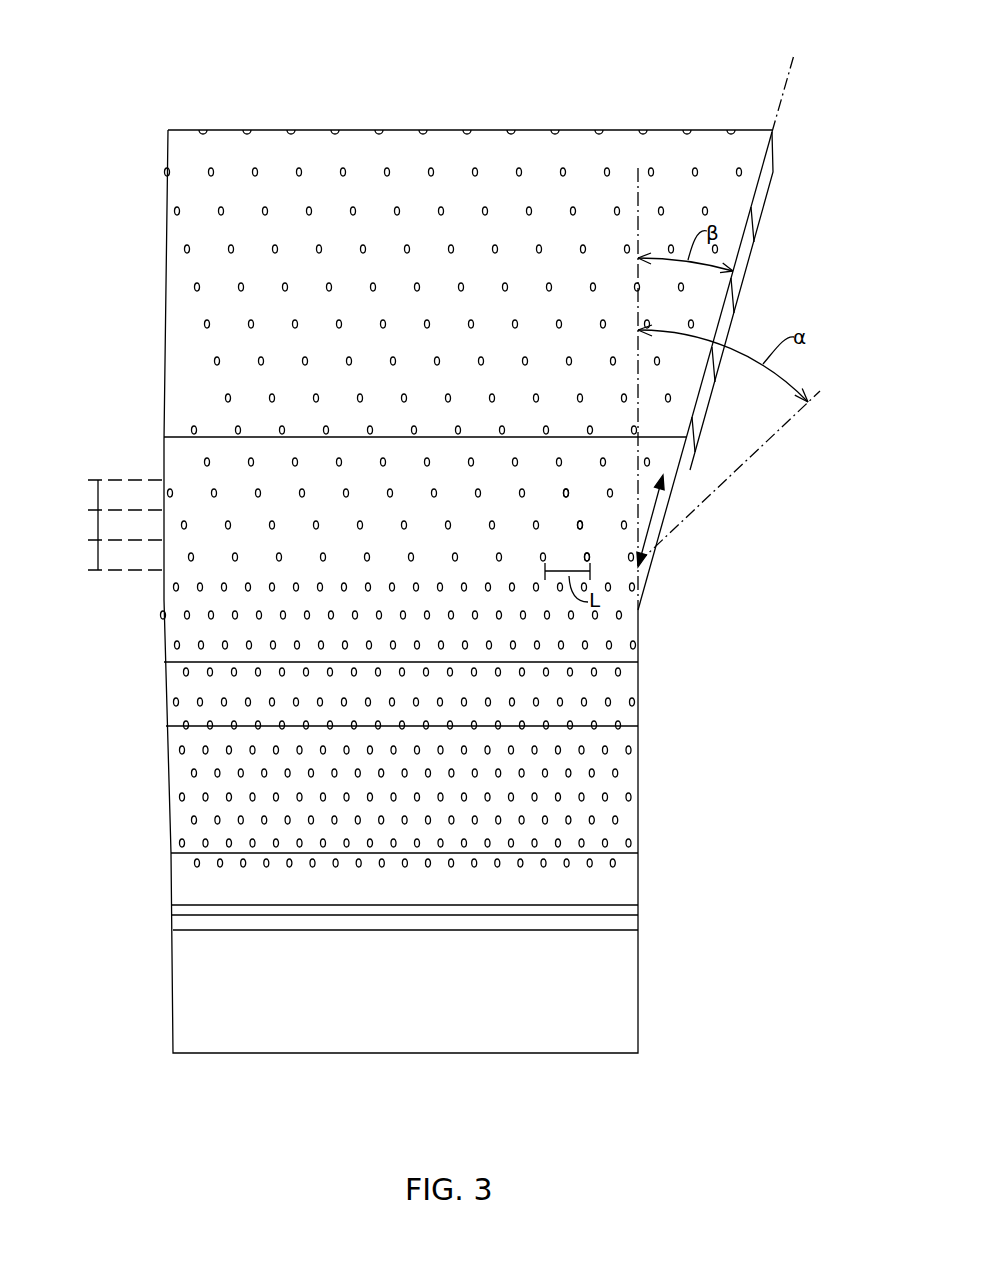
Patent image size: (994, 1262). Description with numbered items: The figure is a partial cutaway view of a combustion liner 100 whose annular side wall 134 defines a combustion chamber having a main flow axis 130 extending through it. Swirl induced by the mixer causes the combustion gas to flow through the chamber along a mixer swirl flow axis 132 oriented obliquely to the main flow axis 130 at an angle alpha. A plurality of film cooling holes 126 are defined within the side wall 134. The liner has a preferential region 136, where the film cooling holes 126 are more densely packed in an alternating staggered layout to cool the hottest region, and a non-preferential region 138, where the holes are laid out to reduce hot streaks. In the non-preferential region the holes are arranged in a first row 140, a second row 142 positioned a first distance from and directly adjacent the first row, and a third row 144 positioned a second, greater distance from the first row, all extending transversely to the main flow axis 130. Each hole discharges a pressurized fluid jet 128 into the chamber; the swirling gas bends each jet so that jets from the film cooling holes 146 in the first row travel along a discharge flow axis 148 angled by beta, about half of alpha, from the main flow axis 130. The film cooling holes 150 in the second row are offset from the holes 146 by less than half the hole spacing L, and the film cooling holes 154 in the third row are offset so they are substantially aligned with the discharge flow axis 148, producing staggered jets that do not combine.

The combustion liner 100 is at (220, 52).
The film cooling holes 126 is at (343, 166).
The pressurized fluid jet 128 is at (667, 503).
The main flow axis 130 is at (638, 195).
The mixer swirl flow axis 132 is at (770, 436).
The annular side wall 134 is at (192, 155).
The preferential region 136 is at (155, 575).
The non-preferential region 138 is at (386, 323).
The first row 140 is at (332, 554).
The second row 142 is at (98, 526).
The third row 144 is at (98, 495).
The film cooling holes 146 is at (590, 558).
The discharge flow axis 148 is at (793, 66).
The film cooling holes 150 is at (583, 526).
The film cooling holes 154 is at (570, 489).